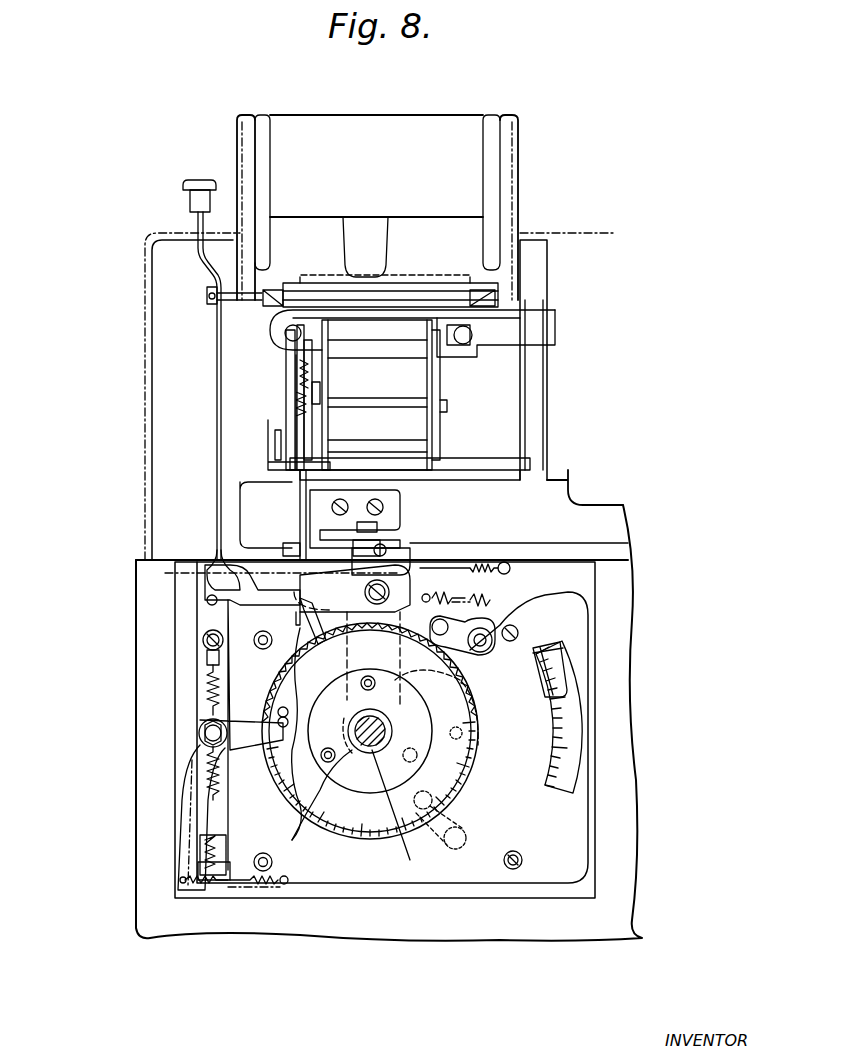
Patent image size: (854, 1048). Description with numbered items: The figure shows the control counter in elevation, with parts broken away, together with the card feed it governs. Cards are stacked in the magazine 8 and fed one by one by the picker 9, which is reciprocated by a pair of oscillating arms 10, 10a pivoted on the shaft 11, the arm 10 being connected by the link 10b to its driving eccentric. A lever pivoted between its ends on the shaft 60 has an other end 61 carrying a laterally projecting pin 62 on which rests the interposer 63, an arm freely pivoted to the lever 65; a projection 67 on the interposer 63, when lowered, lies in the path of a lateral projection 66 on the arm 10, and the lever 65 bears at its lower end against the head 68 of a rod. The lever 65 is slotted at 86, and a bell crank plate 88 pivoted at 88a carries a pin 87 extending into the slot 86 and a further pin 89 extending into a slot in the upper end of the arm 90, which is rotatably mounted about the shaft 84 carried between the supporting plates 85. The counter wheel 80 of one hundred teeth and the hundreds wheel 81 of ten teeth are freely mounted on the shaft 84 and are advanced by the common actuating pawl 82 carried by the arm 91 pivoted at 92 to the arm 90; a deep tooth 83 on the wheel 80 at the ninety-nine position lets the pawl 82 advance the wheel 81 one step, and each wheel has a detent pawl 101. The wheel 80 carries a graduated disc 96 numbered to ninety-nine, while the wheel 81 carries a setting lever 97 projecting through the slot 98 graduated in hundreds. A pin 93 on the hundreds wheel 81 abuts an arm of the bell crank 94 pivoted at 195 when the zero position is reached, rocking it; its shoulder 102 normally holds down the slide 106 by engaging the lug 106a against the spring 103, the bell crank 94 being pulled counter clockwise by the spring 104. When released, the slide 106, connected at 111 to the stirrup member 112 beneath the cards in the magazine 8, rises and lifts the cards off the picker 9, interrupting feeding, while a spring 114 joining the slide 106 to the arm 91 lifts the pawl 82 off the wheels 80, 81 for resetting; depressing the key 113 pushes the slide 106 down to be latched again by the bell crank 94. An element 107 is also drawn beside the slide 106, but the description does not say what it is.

The magazine 8 is at (513, 125).
The picker 9 is at (395, 300).
The oscillating arm 10 is at (318, 348).
The oscillating arm 10a is at (435, 378).
The link 10b is at (432, 378).
The shaft 11 is at (480, 455).
The shaft 60 is at (278, 440).
The other end of lever 61 is at (293, 420).
The laterally projecting pin 62 is at (298, 382).
The interposer 63 is at (290, 400).
The lever 65 is at (300, 497).
The lateral projection 66 is at (326, 394).
The projection 67 is at (317, 382).
The head of rod 68 is at (245, 588).
The counter wheel 80 is at (317, 807).
The hundreds wheel 81 is at (283, 780).
The actuating pawl 82 is at (318, 632).
The deep tooth 83 is at (312, 635).
The shaft 84 is at (375, 743).
The supporting plates 85 is at (460, 887).
The slot 86 is at (292, 512).
The pin 87 is at (293, 550).
The bell crank plate 88 is at (327, 550).
The pivot 88a is at (393, 545).
The pin 89 is at (393, 545).
The arm 90 is at (420, 592).
The arm 91 is at (233, 570).
The pivot 92 is at (374, 606).
The pin 93 is at (283, 710).
The bell crank 94 is at (245, 735).
The graduated disc 96 is at (435, 770).
The setting lever 97 is at (560, 677).
The slot 98 is at (567, 737).
The detent pawl 101 is at (448, 640).
The shoulder 102 is at (200, 862).
The spring 103 is at (215, 762).
The spring 104 is at (258, 885).
The slide 106 is at (203, 728).
The lug 106a is at (215, 870).
The screw 107 is at (205, 640).
The connection 111 is at (207, 295).
The stirrup member 112 is at (272, 293).
The key 113 is at (185, 183).
The spring 114 is at (208, 690).
The pivot 195 is at (208, 758).